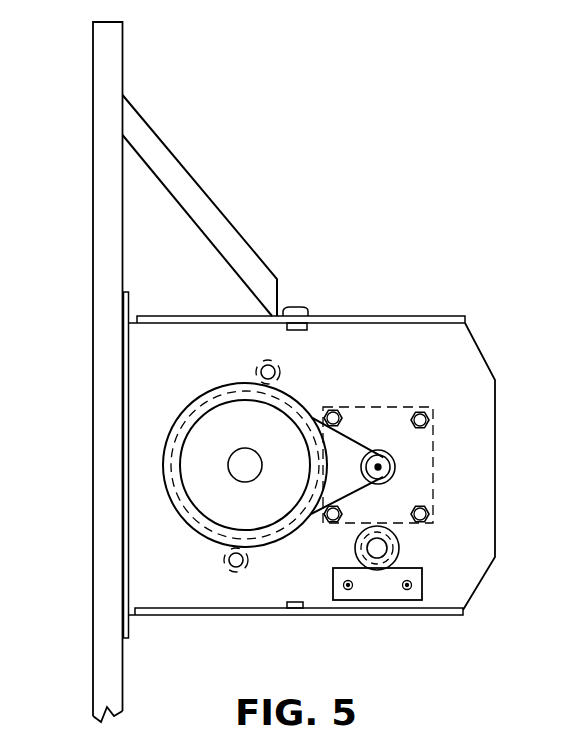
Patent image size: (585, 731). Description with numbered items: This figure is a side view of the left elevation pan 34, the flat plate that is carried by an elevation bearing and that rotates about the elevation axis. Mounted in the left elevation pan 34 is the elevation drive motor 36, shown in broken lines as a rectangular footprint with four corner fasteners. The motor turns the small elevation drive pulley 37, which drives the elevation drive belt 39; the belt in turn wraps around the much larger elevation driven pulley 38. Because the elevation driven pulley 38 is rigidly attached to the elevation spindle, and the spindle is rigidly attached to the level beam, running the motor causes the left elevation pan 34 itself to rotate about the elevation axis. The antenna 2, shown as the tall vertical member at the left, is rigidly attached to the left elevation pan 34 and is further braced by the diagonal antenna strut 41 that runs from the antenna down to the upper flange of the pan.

The antenna 2 is at (97, 256).
The antenna strut 41 is at (235, 227).
The left elevation pan 34 is at (475, 350).
The elevation driven pulley 38 is at (163, 445).
The elevation drive belt 39 is at (353, 437).
The elevation drive motor 36 is at (433, 448).
The elevation drive pulley 37 is at (378, 467).